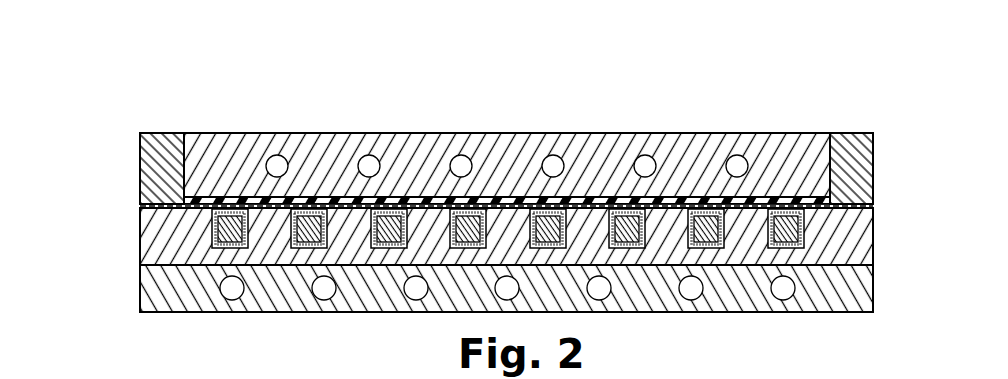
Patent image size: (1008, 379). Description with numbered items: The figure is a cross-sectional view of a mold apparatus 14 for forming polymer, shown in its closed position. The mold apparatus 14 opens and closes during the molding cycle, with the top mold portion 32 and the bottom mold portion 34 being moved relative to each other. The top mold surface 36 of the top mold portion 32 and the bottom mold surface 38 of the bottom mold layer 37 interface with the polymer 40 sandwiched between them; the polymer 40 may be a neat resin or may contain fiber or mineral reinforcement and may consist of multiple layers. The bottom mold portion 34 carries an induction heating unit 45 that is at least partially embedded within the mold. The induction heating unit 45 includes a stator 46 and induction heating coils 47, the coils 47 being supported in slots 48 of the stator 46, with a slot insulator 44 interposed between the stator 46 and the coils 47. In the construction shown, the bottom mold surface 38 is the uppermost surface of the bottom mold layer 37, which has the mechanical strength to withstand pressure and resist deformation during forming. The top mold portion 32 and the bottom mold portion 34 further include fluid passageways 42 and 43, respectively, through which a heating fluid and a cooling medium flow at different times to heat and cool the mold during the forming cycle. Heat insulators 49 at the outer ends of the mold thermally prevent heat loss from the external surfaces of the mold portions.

The mold apparatus 14 is at (456, 209).
The top mold portion 32 is at (458, 148).
The bottom mold portion 34 is at (454, 286).
The top mold surface 36 is at (422, 205).
The bottom mold layer 37 is at (675, 197).
The bottom mold surface 38 is at (698, 203).
The polymer 40 is at (777, 195).
The fluid passageways 42 is at (465, 165).
The fluid passageways 43 is at (690, 290).
The slot insulator 44 is at (508, 286).
The induction heating unit 45 is at (190, 258).
The stator 46 is at (180, 228).
The induction heating coils 47 is at (307, 235).
The slots 48 is at (292, 250).
The heat insulators 49 is at (160, 157).